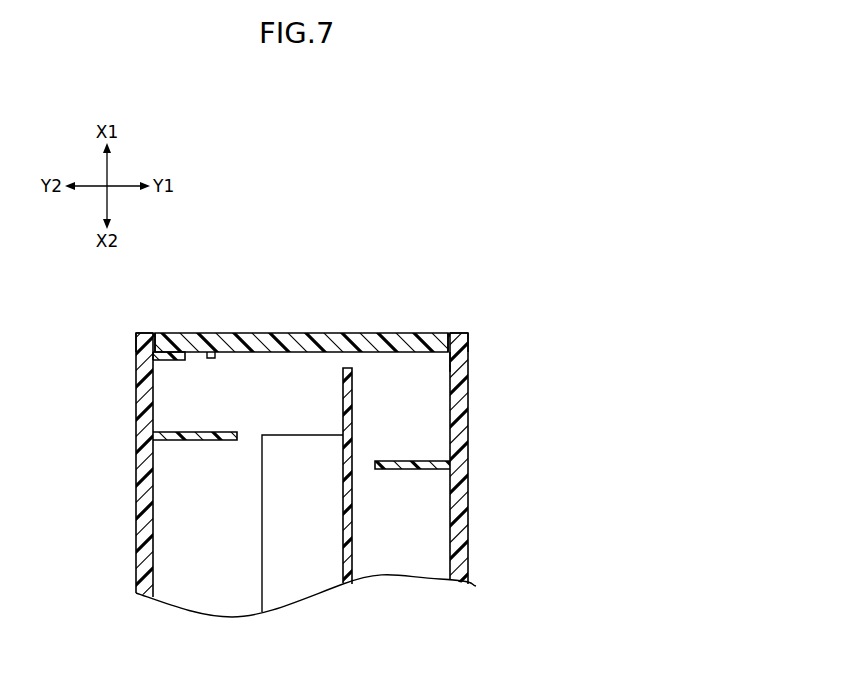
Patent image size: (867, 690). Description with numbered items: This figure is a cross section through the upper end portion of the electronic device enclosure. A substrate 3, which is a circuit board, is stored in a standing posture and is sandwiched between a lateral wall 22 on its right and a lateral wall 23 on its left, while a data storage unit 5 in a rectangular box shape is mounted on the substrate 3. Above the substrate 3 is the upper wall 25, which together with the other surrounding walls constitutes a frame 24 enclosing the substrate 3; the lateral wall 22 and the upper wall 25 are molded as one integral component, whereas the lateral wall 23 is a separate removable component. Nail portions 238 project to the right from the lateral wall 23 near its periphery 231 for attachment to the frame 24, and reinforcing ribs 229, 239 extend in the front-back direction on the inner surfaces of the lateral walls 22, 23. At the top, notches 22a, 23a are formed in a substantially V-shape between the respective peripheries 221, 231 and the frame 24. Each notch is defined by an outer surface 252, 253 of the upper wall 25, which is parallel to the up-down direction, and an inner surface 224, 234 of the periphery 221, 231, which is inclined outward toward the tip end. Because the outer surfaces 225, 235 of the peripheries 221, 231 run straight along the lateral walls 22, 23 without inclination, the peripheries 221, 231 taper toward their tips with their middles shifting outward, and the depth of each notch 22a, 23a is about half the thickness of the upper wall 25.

The substrate 3 is at (352, 553).
The data storage unit 5 is at (262, 572).
The lateral wall 22 is at (467, 542).
The notch 22a is at (456, 330).
The periphery 221 is at (466, 348).
The inner surface 224 is at (462, 333).
The outer surface 225 is at (470, 340).
The reinforcing rib 229 is at (417, 469).
The lateral wall 23 is at (137, 551).
The notch 23a is at (150, 328).
The periphery 231 is at (138, 350).
The inner surface 234 is at (146, 333).
The outer surface 235 is at (135, 338).
The nail portion 238 is at (177, 360).
The reinforcing rib 239 is at (193, 440).
The frame 24 is at (298, 300).
The upper wall 25 is at (336, 333).
The outer surface 252 is at (449, 333).
The outer surface 253 is at (156, 333).